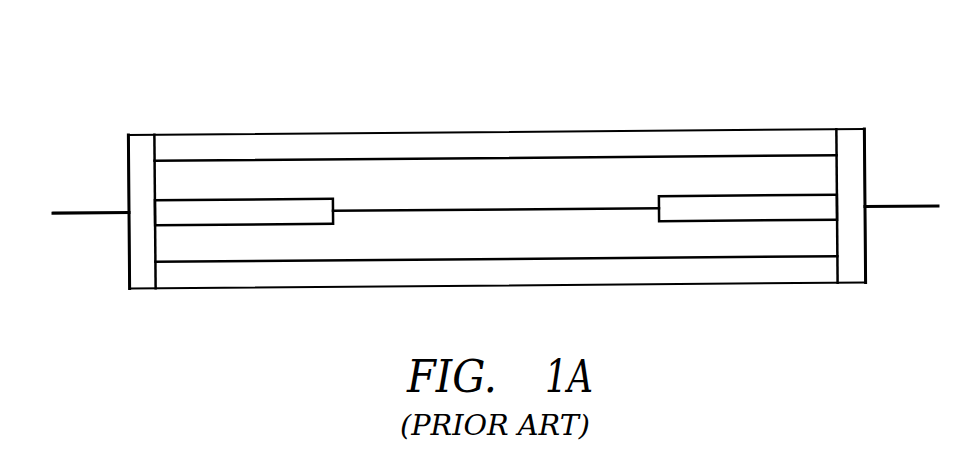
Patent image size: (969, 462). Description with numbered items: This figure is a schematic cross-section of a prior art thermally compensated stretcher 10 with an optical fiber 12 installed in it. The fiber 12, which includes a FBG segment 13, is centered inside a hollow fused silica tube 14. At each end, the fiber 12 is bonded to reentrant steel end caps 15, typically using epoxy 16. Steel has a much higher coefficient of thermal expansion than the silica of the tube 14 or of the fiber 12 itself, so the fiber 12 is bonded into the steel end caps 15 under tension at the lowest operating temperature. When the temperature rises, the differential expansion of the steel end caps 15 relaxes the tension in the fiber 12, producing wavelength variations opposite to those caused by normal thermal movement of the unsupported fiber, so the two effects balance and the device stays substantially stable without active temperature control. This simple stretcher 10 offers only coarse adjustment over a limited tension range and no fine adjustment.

The thermally compensated stretcher 10 is at (229, 87).
The fiber 12 is at (90, 210).
The FBG segment 13 is at (496, 222).
The hollow fused silica tube 14 is at (495, 130).
The reentrant steel end caps 15 is at (142, 137).
The epoxy 16 is at (335, 215).